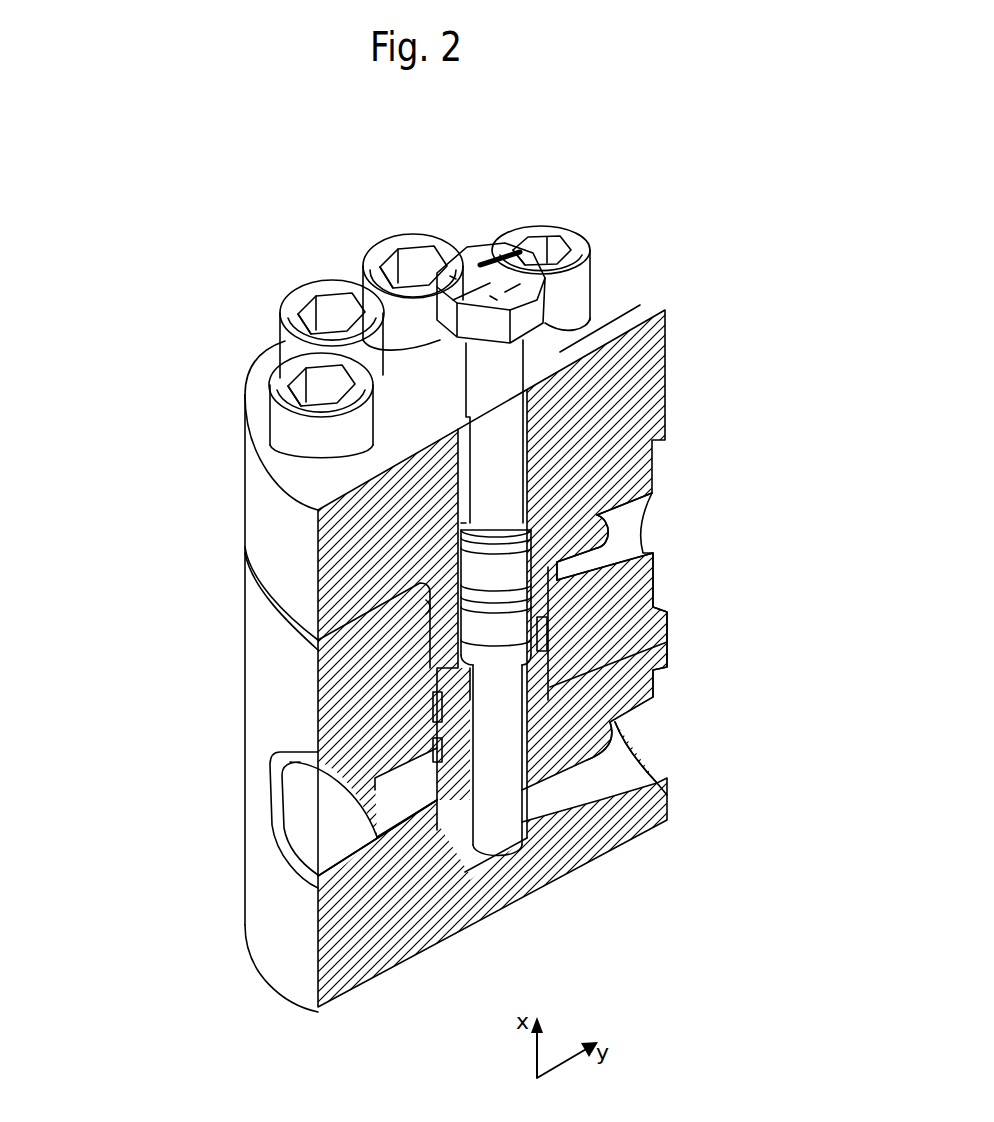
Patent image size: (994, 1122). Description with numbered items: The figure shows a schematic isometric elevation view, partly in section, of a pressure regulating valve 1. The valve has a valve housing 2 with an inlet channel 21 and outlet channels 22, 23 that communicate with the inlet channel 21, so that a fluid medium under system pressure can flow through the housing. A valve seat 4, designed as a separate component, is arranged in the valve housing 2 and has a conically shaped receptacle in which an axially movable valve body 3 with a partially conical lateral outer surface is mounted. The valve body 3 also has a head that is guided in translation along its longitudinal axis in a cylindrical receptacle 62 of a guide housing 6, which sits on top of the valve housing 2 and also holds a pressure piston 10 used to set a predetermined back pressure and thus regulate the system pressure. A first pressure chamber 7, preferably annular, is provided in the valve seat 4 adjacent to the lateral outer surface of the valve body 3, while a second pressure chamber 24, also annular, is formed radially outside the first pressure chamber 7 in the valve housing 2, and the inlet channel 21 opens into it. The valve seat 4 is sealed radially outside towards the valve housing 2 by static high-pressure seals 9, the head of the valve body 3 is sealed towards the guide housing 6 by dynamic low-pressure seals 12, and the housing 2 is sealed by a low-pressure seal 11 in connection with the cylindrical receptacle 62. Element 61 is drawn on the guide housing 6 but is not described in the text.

The pressure regulating valve 1 is at (230, 347).
The valve housing 2 is at (196, 714).
The valve body 3 is at (503, 745).
The valve seat 4 is at (433, 748).
The guide housing 6 is at (228, 491).
The first pressure chamber 7 is at (437, 720).
The static high-pressure seals 9 is at (318, 883).
The pressure piston 10 is at (505, 367).
The low-pressure seal 11 is at (428, 607).
The dynamic low-pressure seals 12 is at (653, 473).
The inlet channel 21 is at (307, 798).
The outlet channel 22 is at (612, 543).
The outlet channel 23 is at (612, 765).
The second pressure chamber 24 is at (555, 677).
The top face of upper body 61 is at (623, 358).
The cylindrical receptacle 62 is at (397, 237).